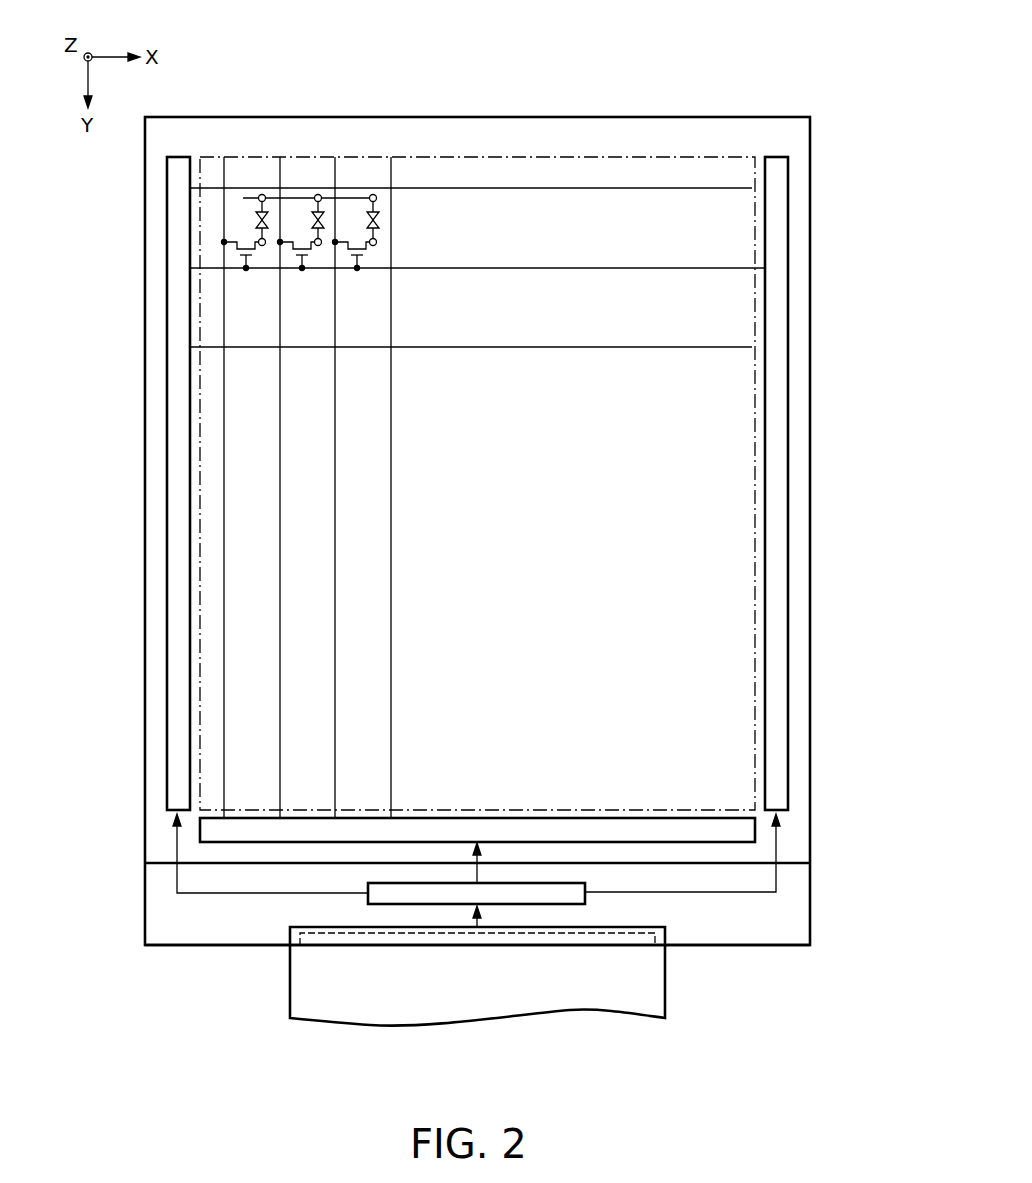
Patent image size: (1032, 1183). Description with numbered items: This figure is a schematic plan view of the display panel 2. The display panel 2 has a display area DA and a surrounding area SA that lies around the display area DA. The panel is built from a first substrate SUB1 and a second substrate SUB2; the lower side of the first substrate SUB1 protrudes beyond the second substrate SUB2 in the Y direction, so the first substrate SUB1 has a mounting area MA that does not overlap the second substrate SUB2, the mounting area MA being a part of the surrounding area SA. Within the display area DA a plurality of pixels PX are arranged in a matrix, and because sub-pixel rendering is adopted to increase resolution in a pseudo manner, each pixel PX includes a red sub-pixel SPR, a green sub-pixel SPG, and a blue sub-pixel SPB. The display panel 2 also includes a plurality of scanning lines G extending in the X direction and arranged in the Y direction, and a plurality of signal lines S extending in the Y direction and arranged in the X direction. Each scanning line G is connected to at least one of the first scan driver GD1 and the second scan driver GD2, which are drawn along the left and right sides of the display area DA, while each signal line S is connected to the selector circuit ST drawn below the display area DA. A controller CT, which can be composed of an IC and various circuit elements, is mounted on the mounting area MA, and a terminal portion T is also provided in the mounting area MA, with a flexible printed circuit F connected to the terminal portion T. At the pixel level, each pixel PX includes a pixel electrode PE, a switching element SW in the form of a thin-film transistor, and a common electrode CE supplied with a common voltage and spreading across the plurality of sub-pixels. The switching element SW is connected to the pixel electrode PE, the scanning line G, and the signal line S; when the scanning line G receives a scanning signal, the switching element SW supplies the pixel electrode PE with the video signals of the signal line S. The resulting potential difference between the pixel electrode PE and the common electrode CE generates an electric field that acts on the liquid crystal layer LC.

The display panel 2 is at (752, 90).
The pixel PX is at (396, 64).
The red sub-pixel SPR is at (246, 180).
The green sub-pixel SPG is at (304, 180).
The blue sub-pixel SPB is at (361, 180).
The display area DA is at (542, 157).
The surrounding area SA is at (630, 130).
The common electrode CE is at (377, 196).
The liquid crystal layer LC is at (378, 216).
The pixel electrode PE is at (377, 240).
The switching element SW is at (370, 252).
The scanning line G is at (672, 190).
The signal line S is at (224, 682).
The first scan driver GD1 is at (166, 375).
The second scan driver GD2 is at (789, 362).
The selector circuit ST is at (571, 814).
The controller CT is at (553, 906).
The terminal portion T is at (640, 926).
The flexible printed circuit F is at (579, 1016).
The first substrate SUB1 is at (203, 950).
The second substrate SUB2 is at (162, 865).
The mounting area MA is at (747, 925).